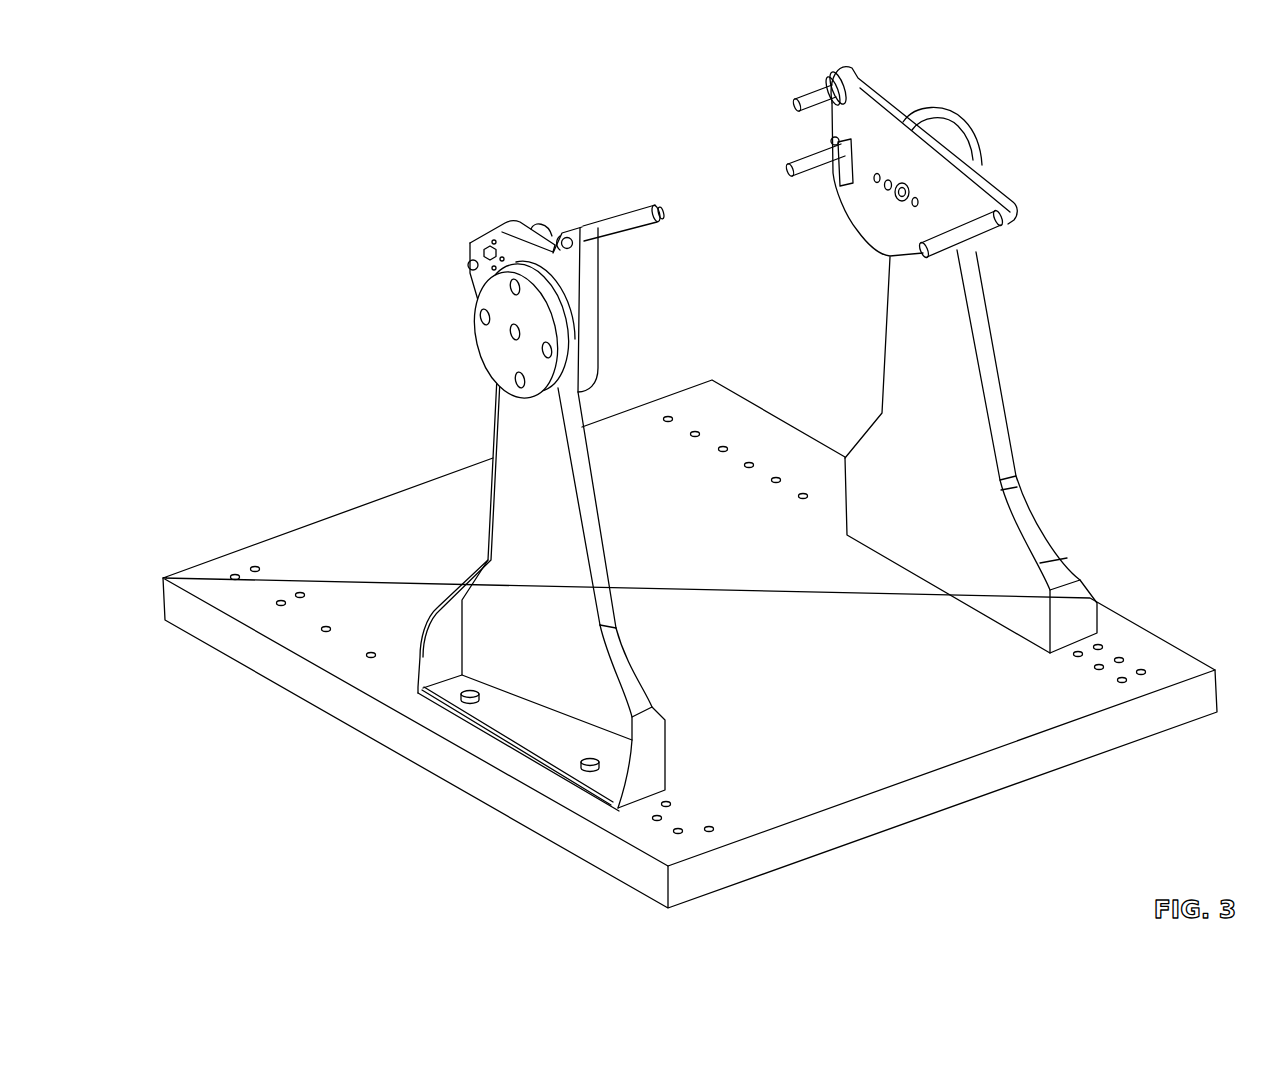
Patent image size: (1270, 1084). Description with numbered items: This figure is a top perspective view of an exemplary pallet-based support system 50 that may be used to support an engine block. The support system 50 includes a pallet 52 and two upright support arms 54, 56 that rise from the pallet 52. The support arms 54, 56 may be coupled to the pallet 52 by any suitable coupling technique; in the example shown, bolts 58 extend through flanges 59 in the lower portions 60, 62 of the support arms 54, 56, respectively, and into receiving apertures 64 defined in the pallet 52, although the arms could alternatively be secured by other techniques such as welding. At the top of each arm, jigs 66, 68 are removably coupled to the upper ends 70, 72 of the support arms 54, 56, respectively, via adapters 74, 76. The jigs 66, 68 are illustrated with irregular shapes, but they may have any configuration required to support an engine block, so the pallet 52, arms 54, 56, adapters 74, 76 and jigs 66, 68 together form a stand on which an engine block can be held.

The pallet-based support system 50 is at (432, 195).
The pallet 52 is at (781, 705).
The support arm 54 is at (503, 477).
The support arm 56 is at (897, 370).
The bolts 58 is at (461, 700).
The flanges 59 is at (524, 740).
The lower portion 60 is at (656, 742).
The lower portion 62 is at (917, 562).
The receiving apertures 64 is at (669, 803).
The jig 66 is at (505, 218).
The jig 68 is at (857, 207).
The upper end 70 is at (544, 418).
The upper end 72 is at (950, 282).
The adapter 74 is at (500, 342).
The adapter 76 is at (950, 108).